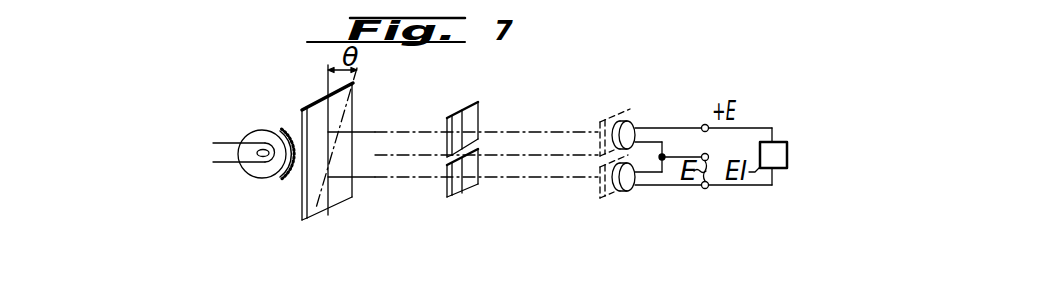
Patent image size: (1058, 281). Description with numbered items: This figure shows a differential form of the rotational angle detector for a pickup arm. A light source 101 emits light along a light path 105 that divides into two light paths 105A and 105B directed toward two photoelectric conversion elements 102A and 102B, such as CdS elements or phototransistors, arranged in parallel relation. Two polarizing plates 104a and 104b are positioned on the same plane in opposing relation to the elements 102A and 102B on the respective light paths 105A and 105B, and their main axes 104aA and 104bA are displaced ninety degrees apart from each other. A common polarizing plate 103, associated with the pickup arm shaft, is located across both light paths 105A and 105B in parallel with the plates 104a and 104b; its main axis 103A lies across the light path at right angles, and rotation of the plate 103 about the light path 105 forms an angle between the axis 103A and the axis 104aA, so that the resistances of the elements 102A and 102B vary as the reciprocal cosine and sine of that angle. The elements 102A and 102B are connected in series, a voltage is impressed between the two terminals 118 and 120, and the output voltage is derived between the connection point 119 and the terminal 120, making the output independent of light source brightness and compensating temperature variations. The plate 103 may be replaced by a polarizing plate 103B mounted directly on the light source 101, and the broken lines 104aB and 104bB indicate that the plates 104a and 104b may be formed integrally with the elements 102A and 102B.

The light source 101 is at (266, 130).
The common polarizing plate 103 is at (326, 222).
The main axis of polarizing plate 103 103A is at (331, 85).
The polarizing plate mounted on light source 103B is at (290, 177).
The light path 105 is at (375, 154).
The first light path 105A is at (414, 131).
The second light path 105B is at (414, 178).
The polarizing plate 104a is at (479, 118).
The main axis of polarizing plate 104a 104aA is at (464, 110).
The polarizing plate 104b is at (476, 185).
The main axis of polarizing plate 104b 104bA is at (451, 198).
The integral polarizing plate 104aB is at (601, 121).
The integral polarizing plate 104bB is at (604, 197).
The photoelectric conversion element 102A is at (636, 126).
The photoelectric conversion element 102B is at (636, 190).
The terminal 118 is at (705, 124).
The connection point 119 is at (708, 156).
The terminal 120 is at (706, 188).